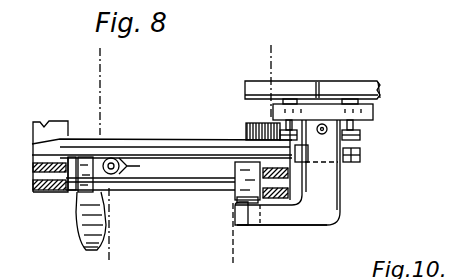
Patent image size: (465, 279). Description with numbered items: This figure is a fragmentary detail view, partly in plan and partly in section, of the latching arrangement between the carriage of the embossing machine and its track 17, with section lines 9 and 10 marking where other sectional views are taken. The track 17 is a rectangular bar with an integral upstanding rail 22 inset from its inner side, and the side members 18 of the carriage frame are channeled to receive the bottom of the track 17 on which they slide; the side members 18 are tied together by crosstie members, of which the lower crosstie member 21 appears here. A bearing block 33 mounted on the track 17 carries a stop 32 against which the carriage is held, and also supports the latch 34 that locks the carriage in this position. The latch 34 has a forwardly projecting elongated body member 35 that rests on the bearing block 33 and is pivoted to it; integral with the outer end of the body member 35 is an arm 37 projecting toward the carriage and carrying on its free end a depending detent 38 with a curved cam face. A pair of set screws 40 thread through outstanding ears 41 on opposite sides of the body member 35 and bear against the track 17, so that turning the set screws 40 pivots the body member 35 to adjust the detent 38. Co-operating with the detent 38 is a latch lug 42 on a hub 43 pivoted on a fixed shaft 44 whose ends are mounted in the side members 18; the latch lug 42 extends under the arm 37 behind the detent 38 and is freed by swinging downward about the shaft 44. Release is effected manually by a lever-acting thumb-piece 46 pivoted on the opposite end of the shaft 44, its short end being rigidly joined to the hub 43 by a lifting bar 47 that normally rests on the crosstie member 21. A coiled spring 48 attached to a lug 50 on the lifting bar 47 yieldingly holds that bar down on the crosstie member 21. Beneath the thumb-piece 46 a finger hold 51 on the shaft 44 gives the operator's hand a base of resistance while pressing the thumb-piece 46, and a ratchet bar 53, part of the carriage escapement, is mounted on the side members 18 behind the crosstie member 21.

The section line 9- 9 is at (270, 70).
The section line 10- 10 is at (99, 99).
The track 17 is at (332, 83).
The side members 18 is at (40, 195).
The lower crosstie member 21 is at (152, 139).
The upstanding rail 22 is at (382, 98).
The stop 32 is at (305, 173).
The bearing block 33 is at (317, 81).
The latch 34 is at (343, 190).
The body member 35 is at (341, 200).
The arm 37 is at (322, 226).
The detent 38 is at (247, 226).
The set screws 40 is at (298, 137).
The ears 41 is at (273, 110).
The latch lug 42 is at (238, 200).
The hub 43 is at (236, 164).
The fixed shaft 44 is at (165, 186).
The thumb-piece 46 is at (107, 217).
The lifting bar 47 is at (190, 143).
The coiled spring 48 is at (135, 168).
The lug 50 is at (112, 158).
The finger hold 51 is at (80, 247).
The ratchet bar 53 is at (246, 131).